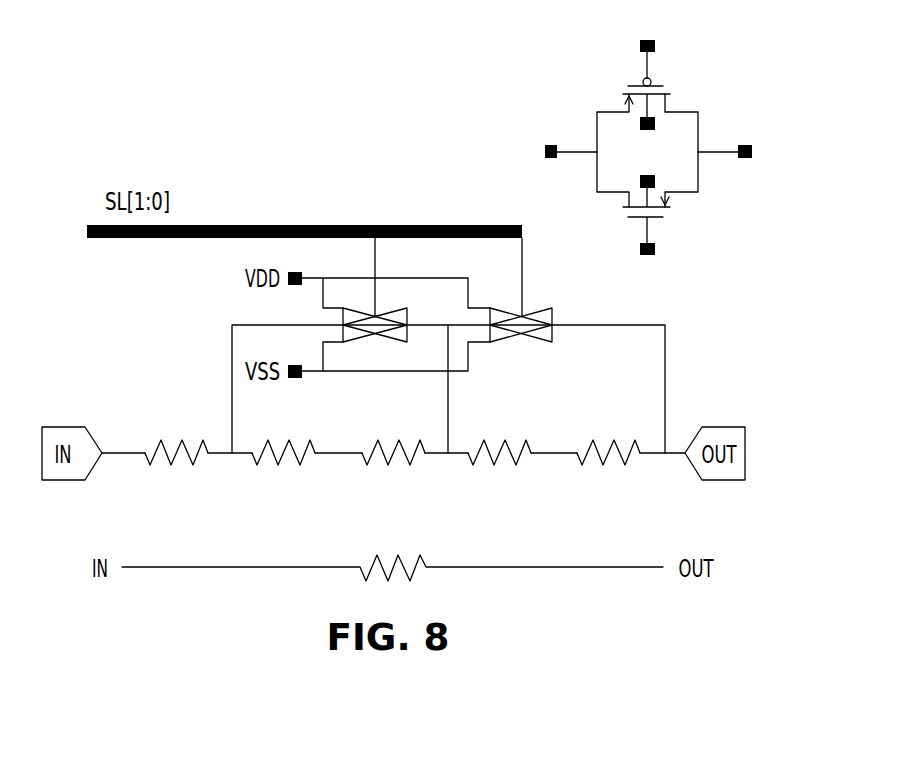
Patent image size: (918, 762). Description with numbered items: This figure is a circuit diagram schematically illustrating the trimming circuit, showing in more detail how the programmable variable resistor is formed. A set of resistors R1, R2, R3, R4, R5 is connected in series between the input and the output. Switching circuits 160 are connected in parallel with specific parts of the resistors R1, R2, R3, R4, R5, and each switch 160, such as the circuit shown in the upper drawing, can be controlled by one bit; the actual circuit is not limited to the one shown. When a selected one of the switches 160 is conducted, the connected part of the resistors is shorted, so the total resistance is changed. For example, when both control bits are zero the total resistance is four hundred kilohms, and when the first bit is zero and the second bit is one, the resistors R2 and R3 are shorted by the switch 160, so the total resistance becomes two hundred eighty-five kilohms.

The switching circuit 160 is at (709, 85).
The resistor R1 is at (176, 454).
The resistor R2 is at (283, 469).
The resistor R3 is at (393, 469).
The resistor R4 is at (499, 469).
The resistor R5 is at (608, 469).